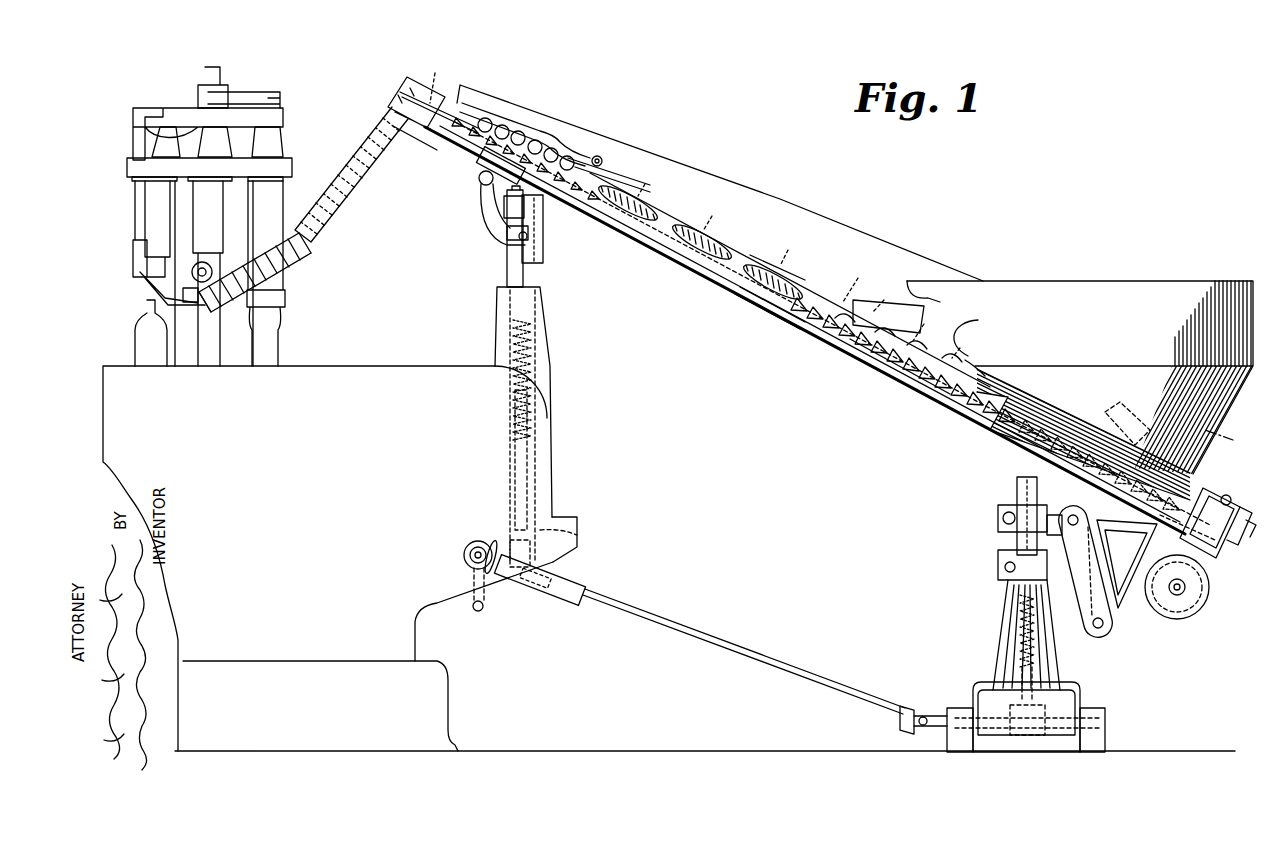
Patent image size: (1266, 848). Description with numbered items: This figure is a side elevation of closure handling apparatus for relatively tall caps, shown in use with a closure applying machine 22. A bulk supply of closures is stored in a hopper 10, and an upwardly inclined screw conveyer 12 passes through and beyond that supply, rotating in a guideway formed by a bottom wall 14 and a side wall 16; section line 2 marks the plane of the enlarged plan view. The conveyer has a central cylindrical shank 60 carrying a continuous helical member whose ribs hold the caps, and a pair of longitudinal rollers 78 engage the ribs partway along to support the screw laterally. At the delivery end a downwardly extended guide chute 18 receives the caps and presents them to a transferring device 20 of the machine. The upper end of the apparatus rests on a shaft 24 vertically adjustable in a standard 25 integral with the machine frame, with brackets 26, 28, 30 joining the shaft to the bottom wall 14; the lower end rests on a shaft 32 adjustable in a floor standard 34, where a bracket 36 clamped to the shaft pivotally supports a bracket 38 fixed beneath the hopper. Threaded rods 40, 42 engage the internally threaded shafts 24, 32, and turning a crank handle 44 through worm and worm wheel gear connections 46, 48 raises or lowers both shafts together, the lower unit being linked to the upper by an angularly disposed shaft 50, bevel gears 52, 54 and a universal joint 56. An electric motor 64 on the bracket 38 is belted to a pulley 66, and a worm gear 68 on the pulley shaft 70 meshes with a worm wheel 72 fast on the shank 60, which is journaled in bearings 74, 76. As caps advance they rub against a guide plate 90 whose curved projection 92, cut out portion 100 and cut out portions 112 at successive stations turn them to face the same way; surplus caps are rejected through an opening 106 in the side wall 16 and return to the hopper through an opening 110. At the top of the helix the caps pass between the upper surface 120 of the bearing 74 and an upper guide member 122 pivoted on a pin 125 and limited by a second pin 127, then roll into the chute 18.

The line 2— 2 is at (487, 62).
The hopper 10 is at (1157, 293).
The screw conveyer 12 is at (888, 366).
The bottom wall 14 is at (702, 274).
The side wall 16 is at (765, 199).
The guide chute 18 is at (340, 222).
The transferring device 20 is at (145, 288).
The closure applying machine 22 is at (324, 304).
The shaft 24 is at (530, 278).
The standard 25 is at (545, 355).
The bracket 26 is at (545, 232).
The bracket 28 is at (505, 238).
The bracket 30 is at (482, 168).
The shaft 32 is at (1016, 485).
The standard 34 is at (1003, 598).
The bracket 36 is at (998, 517).
The bracket 38 is at (1008, 447).
The threaded rod 40 is at (530, 475).
The threaded rod 42 is at (1020, 675).
The crank handle 44 is at (482, 612).
The worm and worm wheel gear connection 46 is at (575, 530).
The worm and worm wheel gear connection 48 is at (1000, 722).
The angularly disposed shaft 50 is at (742, 640).
The bevel gear 52 is at (468, 548).
The bevel gear 54 is at (503, 543).
The universal joint 56 is at (900, 716).
The shank 60 is at (928, 396).
The electric motor 64 is at (1178, 612).
The pulley 66 is at (1200, 473).
The worm gear 68 is at (1172, 512).
The pulley shaft 70 is at (1238, 495).
The worm wheel 72 is at (1150, 542).
The bearing 74 is at (462, 125).
The bearing 76 is at (1222, 552).
The longitudinal rollers 78 is at (785, 318).
The guide plate 90 is at (760, 255).
The curved projection 92 is at (975, 366).
The cut out portion 100 is at (960, 338).
The opening 106 is at (920, 300).
The opening 110 is at (1100, 412).
The cut out portions 112 is at (790, 280).
The upper surface 120 is at (505, 103).
The upper guide member 122 is at (500, 118).
The pin 125 is at (608, 163).
The pin 127 is at (596, 152).